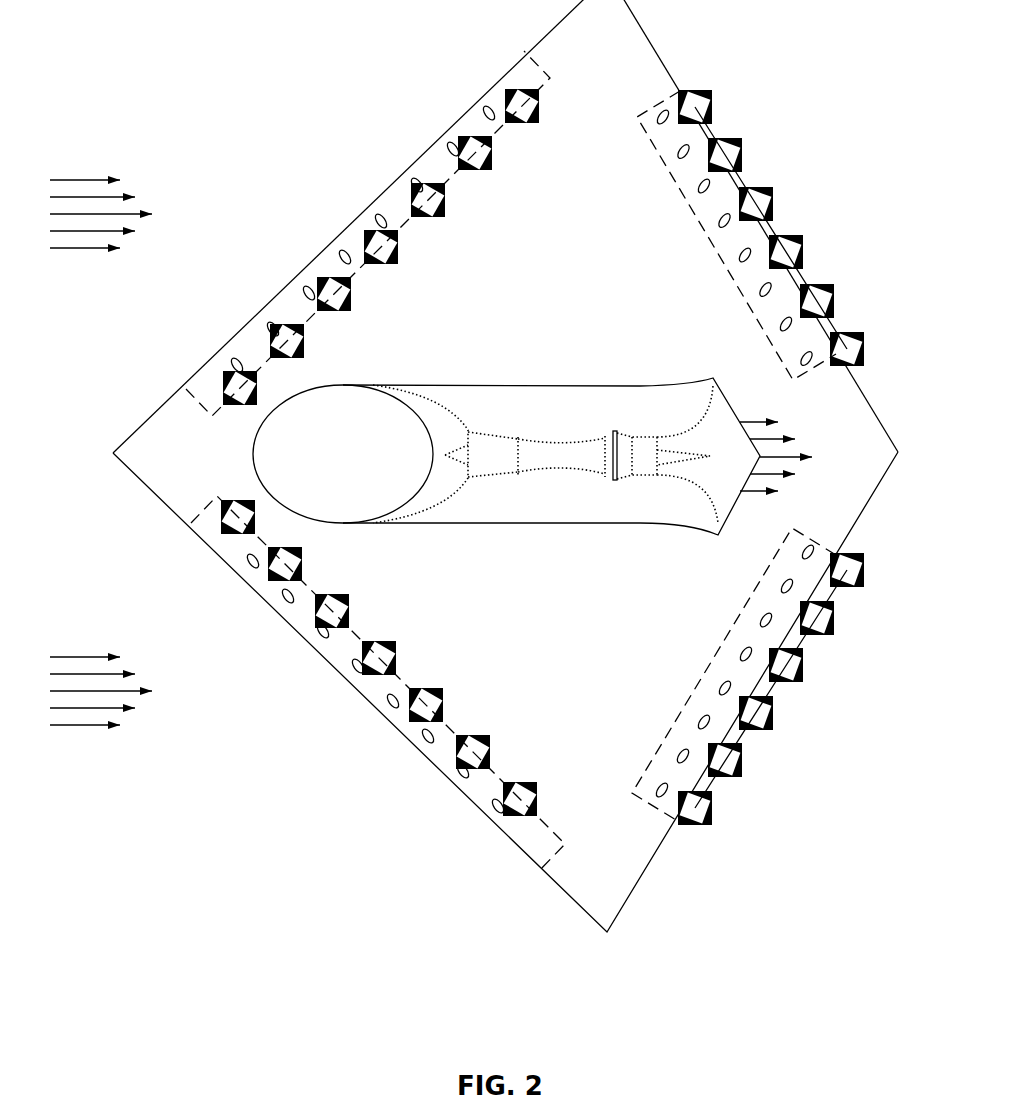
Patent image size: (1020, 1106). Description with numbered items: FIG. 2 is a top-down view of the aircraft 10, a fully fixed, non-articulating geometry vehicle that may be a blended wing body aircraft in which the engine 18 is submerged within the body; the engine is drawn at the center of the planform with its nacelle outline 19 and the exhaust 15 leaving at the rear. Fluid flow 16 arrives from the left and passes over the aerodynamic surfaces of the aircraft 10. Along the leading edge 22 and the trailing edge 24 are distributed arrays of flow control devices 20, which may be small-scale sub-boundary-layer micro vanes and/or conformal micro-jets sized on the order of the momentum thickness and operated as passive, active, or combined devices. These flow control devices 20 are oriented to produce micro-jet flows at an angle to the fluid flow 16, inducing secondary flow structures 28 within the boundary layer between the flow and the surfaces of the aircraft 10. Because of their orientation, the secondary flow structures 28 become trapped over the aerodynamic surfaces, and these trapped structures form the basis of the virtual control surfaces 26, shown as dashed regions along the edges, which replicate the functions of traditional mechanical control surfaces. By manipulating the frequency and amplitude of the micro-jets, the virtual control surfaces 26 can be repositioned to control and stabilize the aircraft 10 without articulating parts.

The aircraft 10 is at (745, 127).
The exhaust flow 15 is at (773, 490).
The fluid flow 16 is at (145, 213).
The engine 18 is at (520, 437).
The turbofan engine nacelle 19 is at (712, 378).
The flow control devices 20 is at (345, 250).
The leading edge 22 is at (498, 80).
The trailing edge 24 is at (658, 55).
The virtual control surfaces 26 is at (553, 82).
The secondary flow structures 28 is at (438, 210).